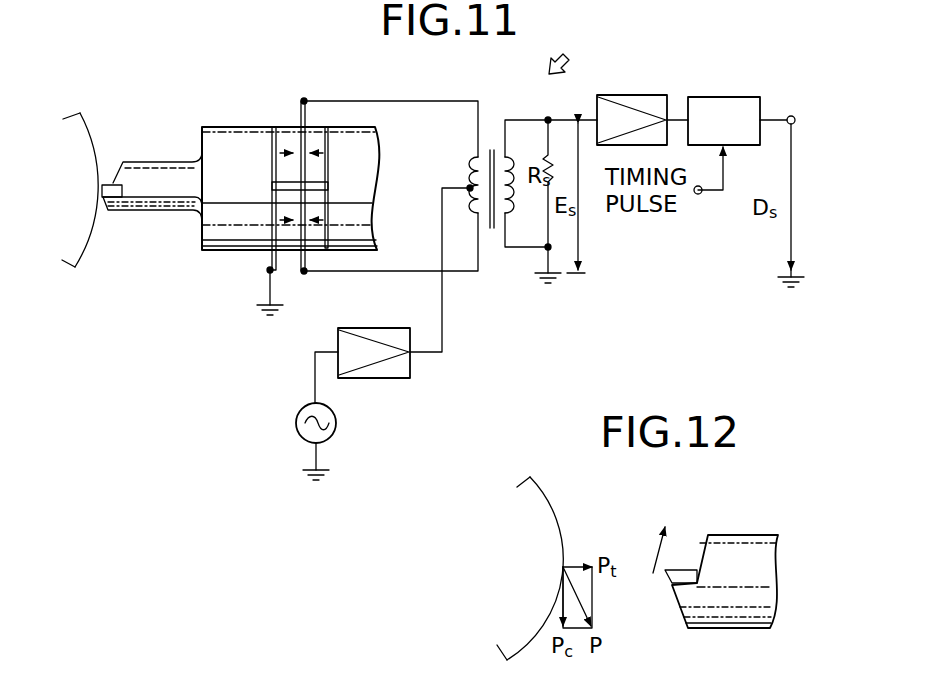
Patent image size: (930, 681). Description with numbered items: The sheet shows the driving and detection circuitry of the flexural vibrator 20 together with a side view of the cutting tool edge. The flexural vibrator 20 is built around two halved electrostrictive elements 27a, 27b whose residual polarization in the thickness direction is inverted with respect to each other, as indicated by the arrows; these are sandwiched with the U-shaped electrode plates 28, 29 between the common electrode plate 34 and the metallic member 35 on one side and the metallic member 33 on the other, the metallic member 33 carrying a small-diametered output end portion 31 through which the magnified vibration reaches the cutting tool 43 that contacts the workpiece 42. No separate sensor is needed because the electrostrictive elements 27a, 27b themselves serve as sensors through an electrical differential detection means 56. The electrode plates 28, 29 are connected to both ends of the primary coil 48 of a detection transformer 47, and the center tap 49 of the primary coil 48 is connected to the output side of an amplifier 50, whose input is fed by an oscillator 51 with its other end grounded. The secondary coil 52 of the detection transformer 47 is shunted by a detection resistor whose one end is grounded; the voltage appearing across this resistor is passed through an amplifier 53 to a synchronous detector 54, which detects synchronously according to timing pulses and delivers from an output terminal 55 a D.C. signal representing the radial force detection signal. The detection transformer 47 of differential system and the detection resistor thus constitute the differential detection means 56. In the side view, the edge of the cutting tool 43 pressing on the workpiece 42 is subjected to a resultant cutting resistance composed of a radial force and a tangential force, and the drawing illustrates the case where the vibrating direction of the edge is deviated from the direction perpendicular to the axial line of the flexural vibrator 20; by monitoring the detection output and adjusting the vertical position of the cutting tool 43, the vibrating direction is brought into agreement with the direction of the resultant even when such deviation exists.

In FIG. 11, the flexural vibrator 20 is at (215, 238).
In FIG. 12, the flexural vibrator 20 is at (745, 546).
In FIG. 11, the halved electrostrictive element 27a is at (283, 132).
In FIG. 11, the halved electrostrictive element 27b is at (288, 240).
In FIG. 11, the electrode plate 28 is at (301, 102).
In FIG. 11, the electrode plate 29 is at (303, 257).
In FIG. 11, the output end portion 31 is at (117, 185).
In FIG. 11, the metallic member 33 is at (150, 200).
In FIG. 11, the common electrode plate 34 is at (271, 234).
In FIG. 11, the metallic member 35 is at (357, 140).
In FIG. 11, the workpiece 42 is at (85, 122).
In FIG. 12, the workpiece 42 is at (545, 518).
In FIG. 11, the cutting tool 43 is at (105, 186).
In FIG. 12, the cutting tool 43 is at (672, 577).
In FIG. 11, the detection transformer 47 is at (492, 148).
In FIG. 11, the primary coil 48 is at (477, 168).
In FIG. 11, the center tap 49 is at (470, 188).
In FIG. 11, the amplifier 50 is at (388, 372).
In FIG. 11, the oscillator 51 is at (299, 419).
In FIG. 11, the secondary coil 52 is at (513, 197).
In FIG. 11, the amplifier 53 is at (642, 98).
In FIG. 11, the synchronous detector 54 is at (728, 98).
In FIG. 11, the output terminal 55 is at (791, 115).
In FIG. 11, the differential detection means 56 is at (573, 48).